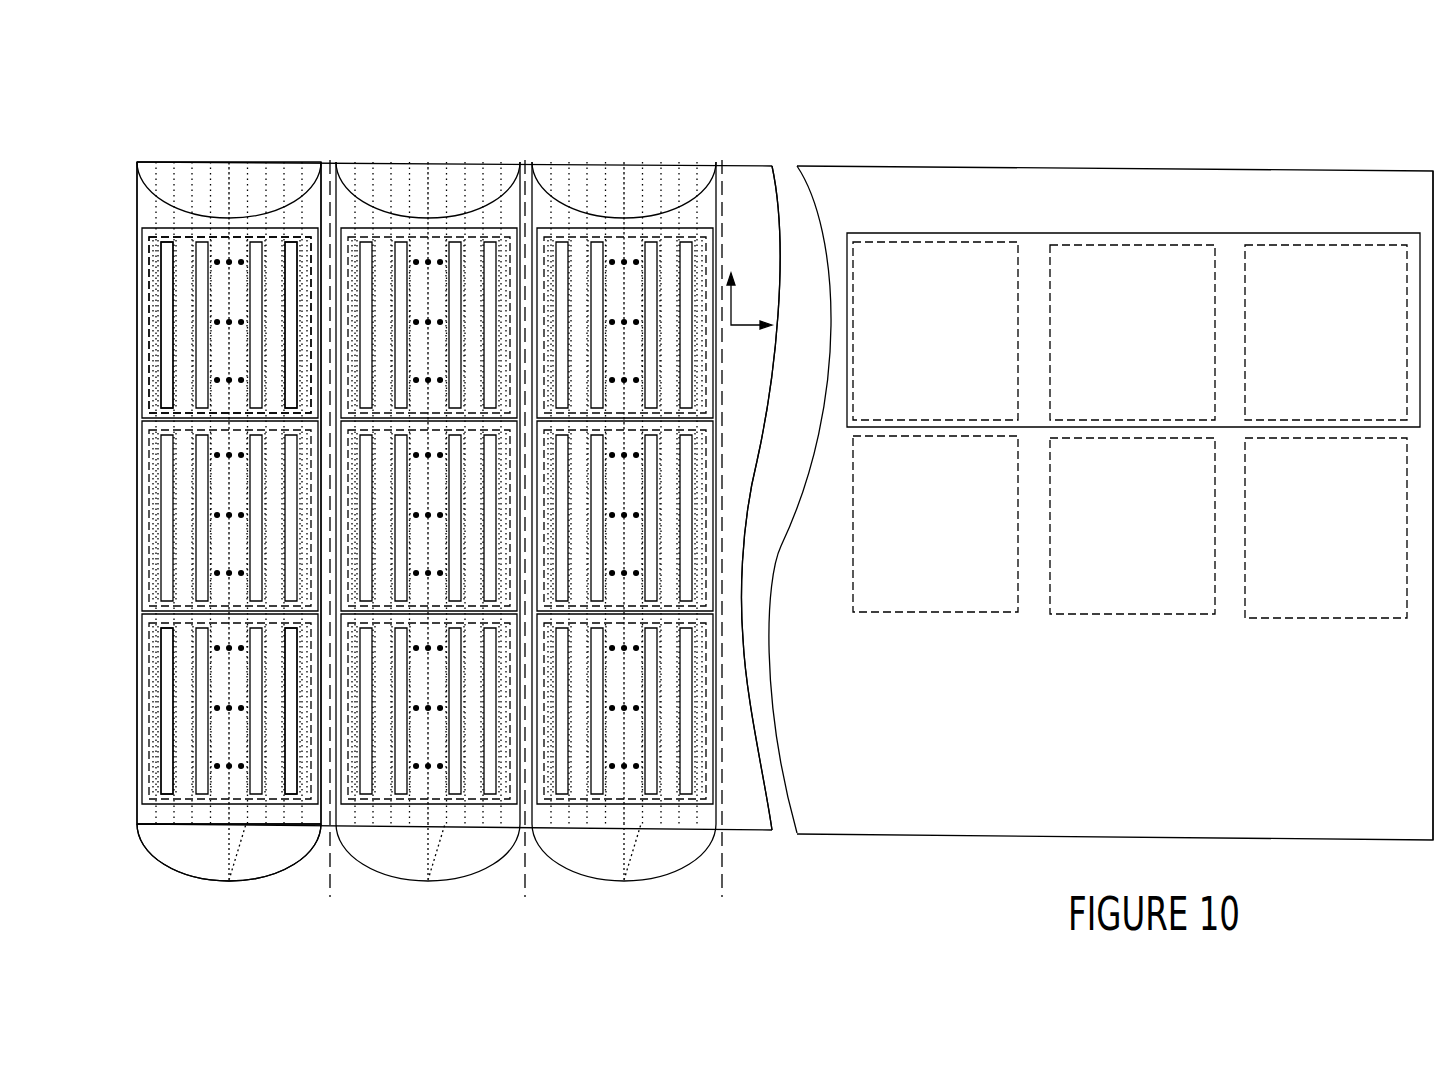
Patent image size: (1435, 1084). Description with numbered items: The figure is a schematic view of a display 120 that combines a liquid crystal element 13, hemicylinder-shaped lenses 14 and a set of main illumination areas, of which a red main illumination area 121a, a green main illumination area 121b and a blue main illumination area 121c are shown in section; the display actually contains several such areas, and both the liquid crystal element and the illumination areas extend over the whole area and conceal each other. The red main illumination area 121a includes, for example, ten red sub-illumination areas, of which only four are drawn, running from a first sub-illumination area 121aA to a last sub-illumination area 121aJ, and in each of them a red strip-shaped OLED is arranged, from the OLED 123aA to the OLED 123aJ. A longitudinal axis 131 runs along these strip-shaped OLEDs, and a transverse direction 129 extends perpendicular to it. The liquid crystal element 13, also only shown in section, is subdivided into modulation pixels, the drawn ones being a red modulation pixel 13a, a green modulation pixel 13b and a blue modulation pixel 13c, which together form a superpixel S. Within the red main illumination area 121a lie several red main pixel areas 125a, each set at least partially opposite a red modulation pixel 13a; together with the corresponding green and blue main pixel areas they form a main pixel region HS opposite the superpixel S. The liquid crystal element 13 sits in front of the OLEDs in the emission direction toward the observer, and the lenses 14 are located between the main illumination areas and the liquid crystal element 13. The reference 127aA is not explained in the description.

The main pixel region HS is at (141, 228).
The contact finger 127aA is at (163, 240).
The red main pixel area 125a is at (150, 236).
The red main illumination area 121a is at (318, 153).
The red sub-illumination area 121aJ is at (297, 240).
The green main illumination area 121b is at (520, 153).
The blue main illumination area 121c is at (714, 153).
The longitudinal axis 131 is at (735, 300).
The display 120 is at (807, 145).
The liquid crystal element 13 is at (1240, 168).
The red modulation pixel 13a is at (962, 277).
The green modulation pixel 13b is at (1163, 280).
The blue modulation pixel 13c is at (1363, 280).
The red strip-shaped OLED 123aA is at (169, 790).
The red sub-illumination area 121aA is at (172, 825).
The lenses 14 is at (290, 855).
The red strip-shaped OLED 123aJ is at (290, 797).
The transverse direction 129 is at (748, 327).
The superpixel S is at (1432, 565).